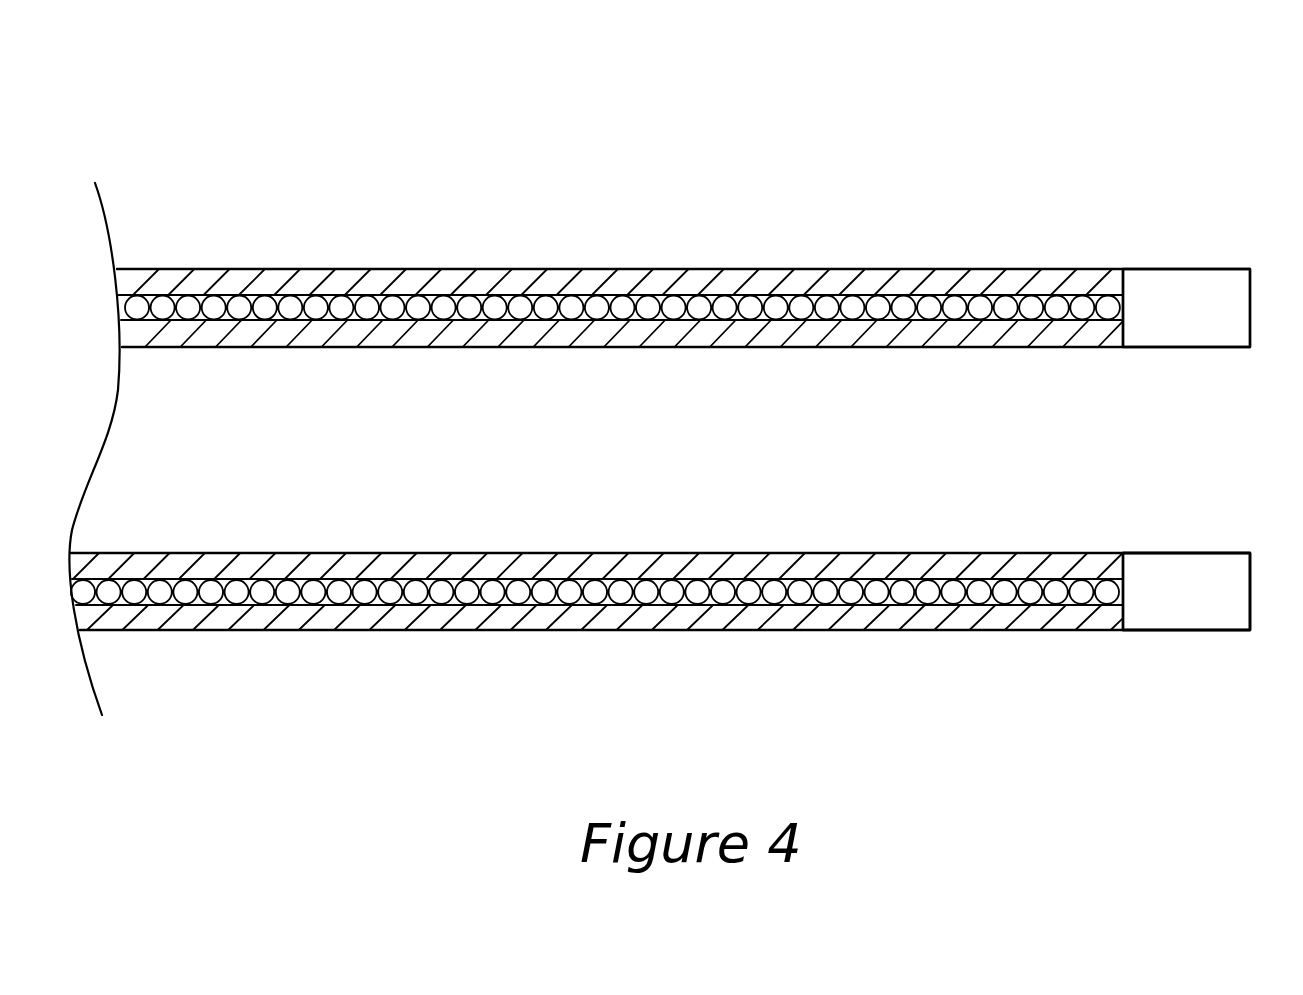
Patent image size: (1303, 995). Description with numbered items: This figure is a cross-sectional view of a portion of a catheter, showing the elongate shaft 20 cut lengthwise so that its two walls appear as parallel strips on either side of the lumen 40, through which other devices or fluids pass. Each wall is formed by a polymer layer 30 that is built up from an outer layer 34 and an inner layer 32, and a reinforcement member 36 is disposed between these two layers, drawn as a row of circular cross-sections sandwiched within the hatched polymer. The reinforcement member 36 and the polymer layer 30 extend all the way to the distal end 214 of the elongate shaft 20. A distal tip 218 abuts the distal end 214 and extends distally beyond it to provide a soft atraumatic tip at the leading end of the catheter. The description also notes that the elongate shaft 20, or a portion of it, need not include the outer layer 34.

The elongate shaft 20 is at (637, 130).
The polymer layer 30 is at (183, 620).
The inner layer 32 is at (130, 336).
The outer layer 34 is at (118, 283).
The reinforcement member 36 is at (120, 308).
The lumen 40 is at (143, 452).
The distal end 214 is at (1102, 672).
The distal tip 218 is at (1172, 285).